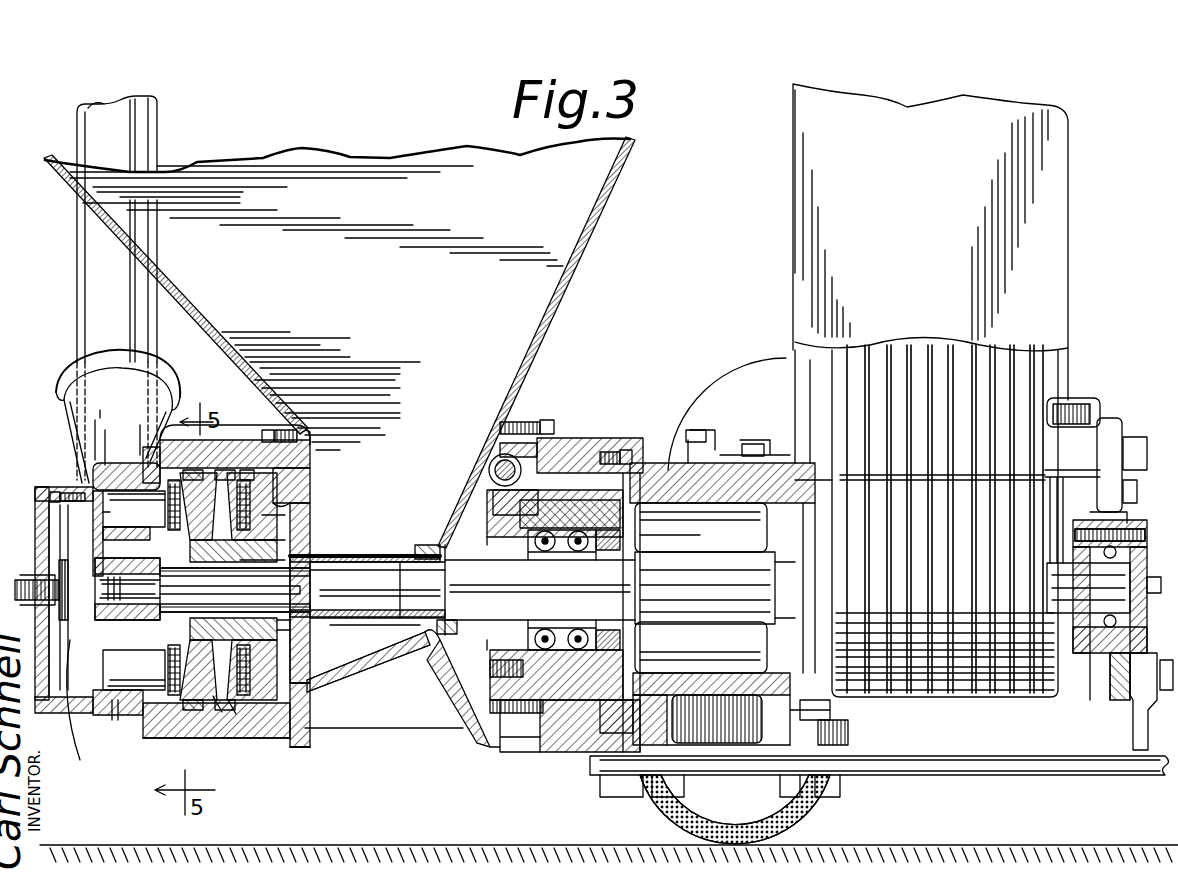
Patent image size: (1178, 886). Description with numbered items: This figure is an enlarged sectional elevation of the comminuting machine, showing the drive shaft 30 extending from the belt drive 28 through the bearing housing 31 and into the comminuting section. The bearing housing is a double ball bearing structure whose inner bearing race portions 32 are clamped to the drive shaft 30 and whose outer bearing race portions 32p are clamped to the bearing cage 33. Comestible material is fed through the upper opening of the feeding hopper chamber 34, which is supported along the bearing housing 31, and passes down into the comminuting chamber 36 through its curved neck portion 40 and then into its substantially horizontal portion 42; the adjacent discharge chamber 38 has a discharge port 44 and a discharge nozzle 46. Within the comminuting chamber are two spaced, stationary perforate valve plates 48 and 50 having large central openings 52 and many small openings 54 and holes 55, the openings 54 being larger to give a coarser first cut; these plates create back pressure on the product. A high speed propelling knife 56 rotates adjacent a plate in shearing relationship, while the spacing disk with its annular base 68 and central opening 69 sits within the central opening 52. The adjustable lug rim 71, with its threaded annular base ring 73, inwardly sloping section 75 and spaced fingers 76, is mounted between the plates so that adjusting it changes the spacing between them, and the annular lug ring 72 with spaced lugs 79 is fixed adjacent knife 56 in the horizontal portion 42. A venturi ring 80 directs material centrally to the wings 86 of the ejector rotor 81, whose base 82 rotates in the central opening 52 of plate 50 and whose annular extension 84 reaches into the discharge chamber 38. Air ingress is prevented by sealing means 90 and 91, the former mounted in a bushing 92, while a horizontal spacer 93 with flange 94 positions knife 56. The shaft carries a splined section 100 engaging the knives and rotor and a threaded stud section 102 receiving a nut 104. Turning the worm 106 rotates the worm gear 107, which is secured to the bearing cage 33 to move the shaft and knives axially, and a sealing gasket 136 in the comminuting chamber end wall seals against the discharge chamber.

The belt drive 28 is at (1056, 374).
The drive shaft 30 is at (710, 582).
The bearing housing 31 is at (601, 438).
The inner bearing race portions 32 is at (594, 624).
The outer bearing race portions 32p is at (600, 522).
The bearing cage 33 is at (626, 517).
The feeding hopper chamber 34 is at (362, 276).
The comminuting chamber 36 is at (252, 746).
The discharge chamber 38 is at (97, 724).
The neck portion 40 is at (385, 622).
The horizontal portion 42 is at (296, 643).
The discharge port 44 is at (76, 464).
The discharge nozzle 46 is at (83, 275).
The perforate valve plate 48 is at (248, 470).
The perforate valve plate 50 is at (230, 440).
The central openings 52 is at (108, 520).
The openings 54 is at (263, 510).
The holes 55 is at (168, 508).
The high speed propelling knife 56 is at (267, 523).
The annular base 68 is at (298, 600).
The central opening 69 is at (236, 566).
The adjustable lug rim 71 is at (232, 717).
The annular lug ring 72 is at (296, 478).
The annular base ring 73 is at (304, 710).
The inwardly sloping section 75 is at (218, 710).
The spaced fingers 76 is at (200, 506).
The spaced lugs 79 is at (304, 688).
The venturi ring 80 is at (168, 495).
The ejector rotor 81 is at (168, 660).
The base 82 is at (128, 593).
The annular extension 84 is at (88, 700).
The wings 86 is at (93, 480).
The sealing means 90 is at (496, 544).
The sealing means 91 is at (413, 620).
The bushing 92 is at (420, 664).
The horizontal spacer 93 is at (362, 558).
The flange 94 is at (292, 630).
The splined section 100 is at (306, 578).
The stud section 102 is at (82, 630).
The nut 104 is at (90, 598).
The worm 106 is at (486, 458).
The worm gear 107 is at (508, 518).
The sealing gasket 136 is at (186, 470).